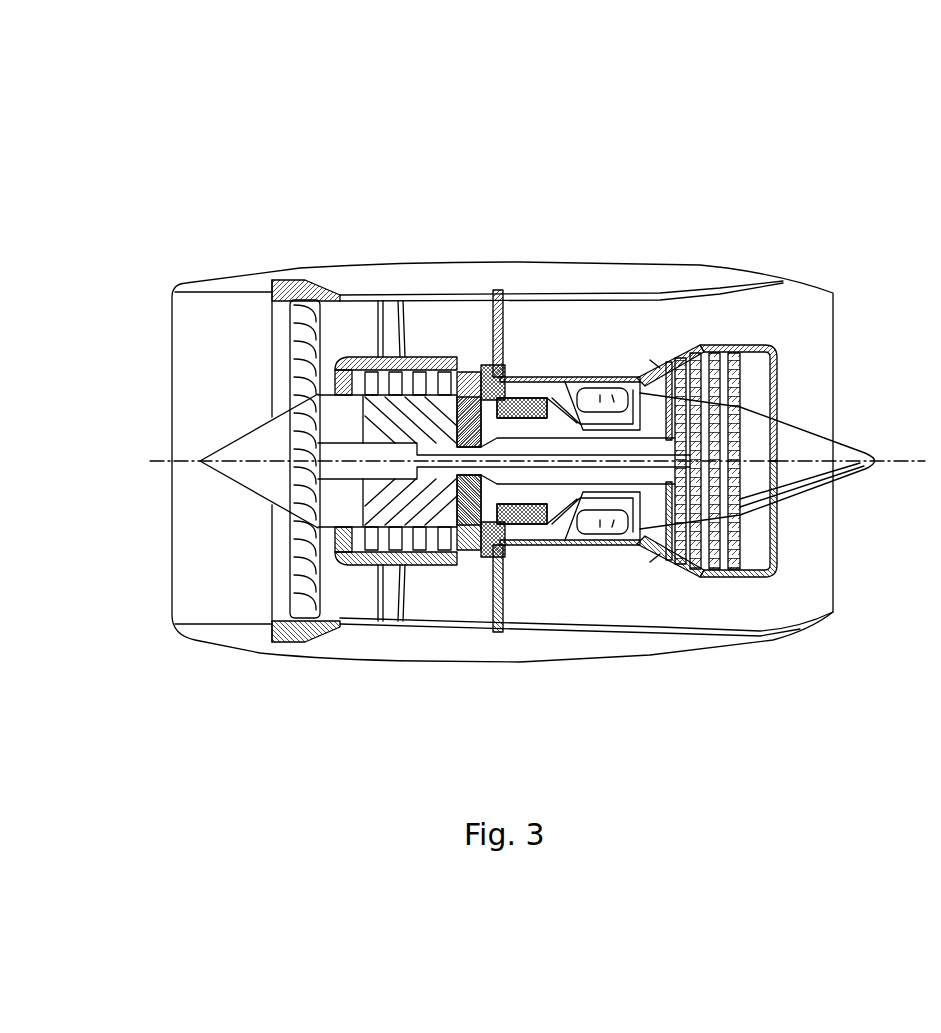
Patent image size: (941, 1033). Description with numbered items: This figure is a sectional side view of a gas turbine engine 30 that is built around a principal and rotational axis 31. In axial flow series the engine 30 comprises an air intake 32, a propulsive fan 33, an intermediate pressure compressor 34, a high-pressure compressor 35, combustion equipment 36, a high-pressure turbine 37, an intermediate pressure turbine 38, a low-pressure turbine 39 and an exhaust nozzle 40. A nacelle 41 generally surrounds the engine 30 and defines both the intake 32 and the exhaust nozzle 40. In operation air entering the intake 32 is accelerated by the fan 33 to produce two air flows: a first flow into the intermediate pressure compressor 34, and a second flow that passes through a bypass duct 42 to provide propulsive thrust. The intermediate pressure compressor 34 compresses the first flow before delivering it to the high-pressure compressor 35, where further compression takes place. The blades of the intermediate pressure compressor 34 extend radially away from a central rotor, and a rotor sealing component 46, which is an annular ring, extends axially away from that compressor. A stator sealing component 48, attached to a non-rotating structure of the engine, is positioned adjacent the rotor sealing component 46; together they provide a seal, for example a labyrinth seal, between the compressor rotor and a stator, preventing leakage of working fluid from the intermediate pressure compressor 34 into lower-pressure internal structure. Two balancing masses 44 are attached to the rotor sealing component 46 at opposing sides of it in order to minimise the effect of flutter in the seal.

The gas turbine engine 30 is at (486, 433).
The principal and rotational axis 31 is at (162, 458).
The air intake 32 is at (233, 294).
The propulsive fan 33 is at (290, 592).
The intermediate pressure compressor 34 is at (410, 533).
The high-pressure compressor 35 is at (521, 404).
The combustion equipment 36 is at (593, 527).
The high-pressure turbine 37 is at (637, 527).
The intermediate pressure turbine 38 is at (667, 375).
The low-pressure turbine 39 is at (690, 550).
The exhaust nozzle 40 is at (838, 614).
The nacelle 41 is at (640, 262).
The bypass duct 42 is at (444, 345).
The balancing masses 44 is at (480, 447).
The rotor sealing component 46 is at (456, 447).
The stator sealing component 48 is at (490, 397).